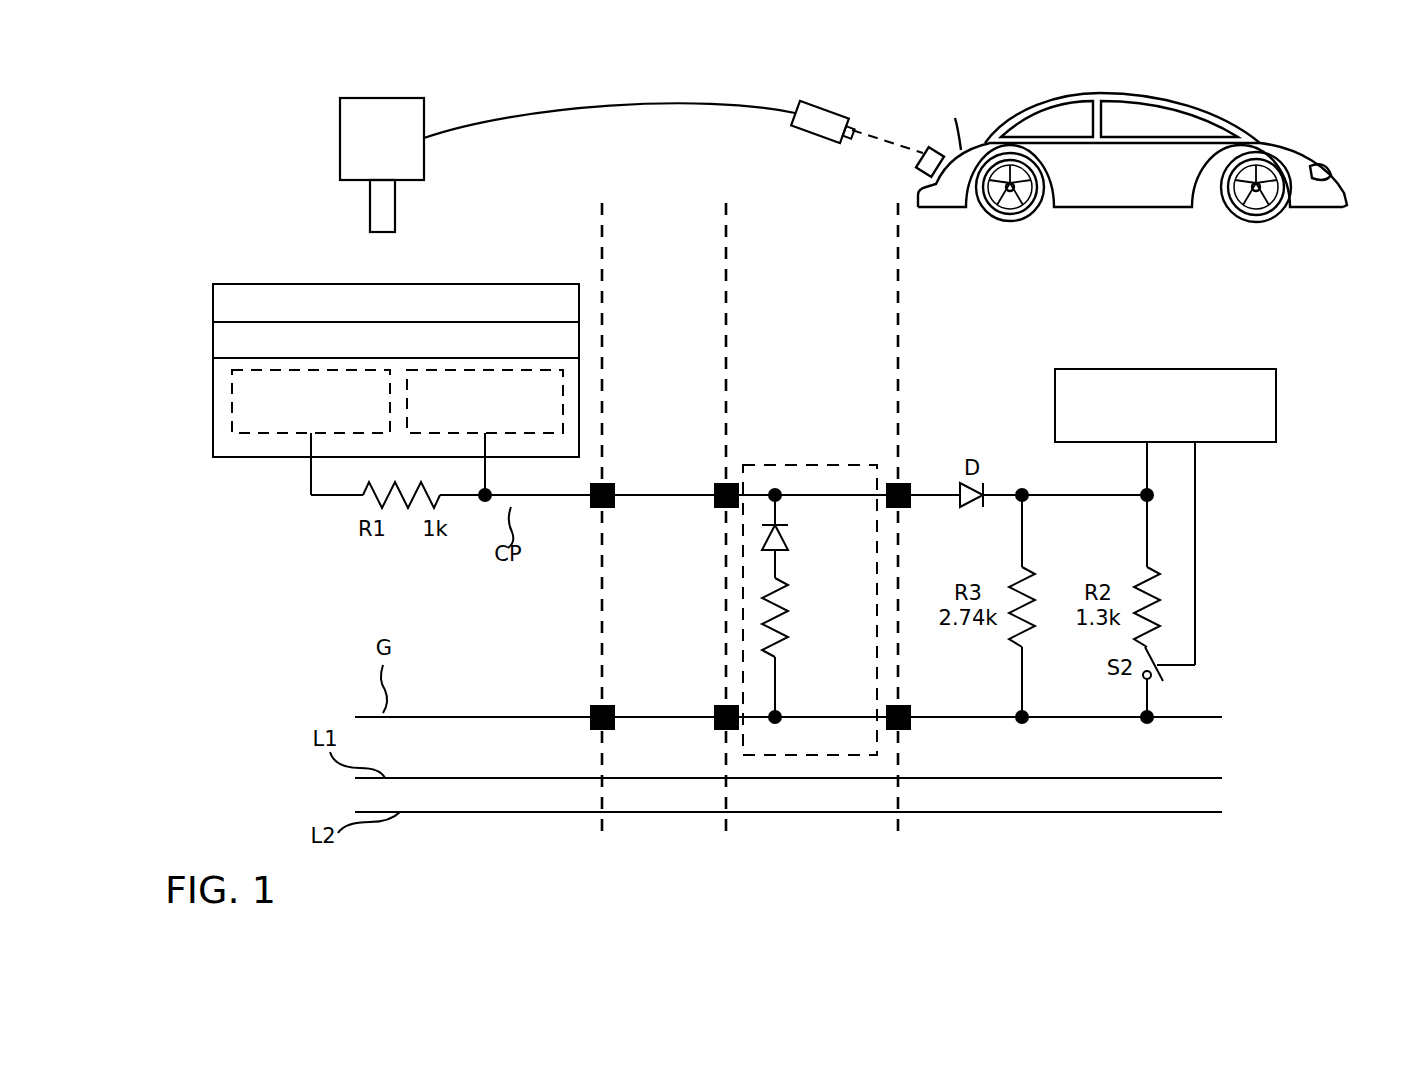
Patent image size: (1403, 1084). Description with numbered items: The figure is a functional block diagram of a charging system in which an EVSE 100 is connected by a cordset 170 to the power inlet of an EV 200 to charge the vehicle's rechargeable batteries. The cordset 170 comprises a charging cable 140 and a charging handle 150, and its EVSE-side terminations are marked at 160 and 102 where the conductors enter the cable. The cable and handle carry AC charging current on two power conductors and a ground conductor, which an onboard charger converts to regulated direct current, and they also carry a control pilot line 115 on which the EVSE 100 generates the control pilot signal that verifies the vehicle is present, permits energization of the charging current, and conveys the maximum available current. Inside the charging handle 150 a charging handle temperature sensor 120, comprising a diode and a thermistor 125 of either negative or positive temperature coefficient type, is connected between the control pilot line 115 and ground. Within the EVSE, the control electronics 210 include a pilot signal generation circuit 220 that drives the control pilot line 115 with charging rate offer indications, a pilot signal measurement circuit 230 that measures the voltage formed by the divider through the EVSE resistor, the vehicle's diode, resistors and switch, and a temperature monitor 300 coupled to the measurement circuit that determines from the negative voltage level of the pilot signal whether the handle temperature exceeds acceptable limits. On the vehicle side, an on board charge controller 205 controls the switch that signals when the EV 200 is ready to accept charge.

The EVSE 100 is at (442, 164).
The charging cable connector 102 is at (584, 600).
The control pilot line 115 is at (667, 492).
The charging handle temperature sensor 120 is at (810, 576).
The thermistor 125 is at (797, 652).
The charging cable 140 is at (638, 153).
The charging handle 150 is at (799, 153).
The cable connector at EVSE 160 is at (714, 521).
The cordset 170 is at (714, 558).
The EV 200 is at (1018, 237).
The on board charge controller 205 is at (1183, 369).
The control electronics 210 is at (446, 358).
The pilot signal generation circuit 220 is at (250, 434).
The pilot signal measurement circuit 230 is at (563, 402).
The temperature monitor 300 is at (408, 340).